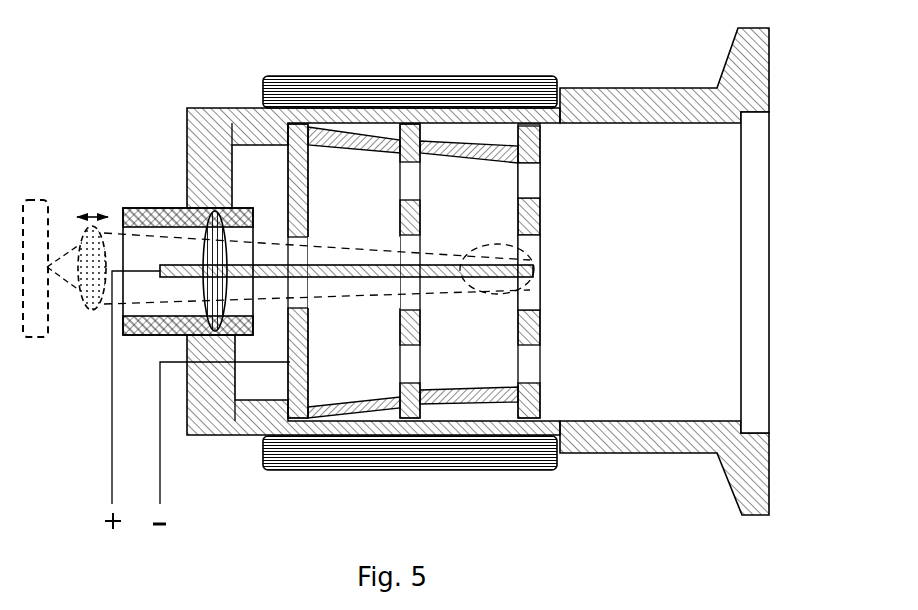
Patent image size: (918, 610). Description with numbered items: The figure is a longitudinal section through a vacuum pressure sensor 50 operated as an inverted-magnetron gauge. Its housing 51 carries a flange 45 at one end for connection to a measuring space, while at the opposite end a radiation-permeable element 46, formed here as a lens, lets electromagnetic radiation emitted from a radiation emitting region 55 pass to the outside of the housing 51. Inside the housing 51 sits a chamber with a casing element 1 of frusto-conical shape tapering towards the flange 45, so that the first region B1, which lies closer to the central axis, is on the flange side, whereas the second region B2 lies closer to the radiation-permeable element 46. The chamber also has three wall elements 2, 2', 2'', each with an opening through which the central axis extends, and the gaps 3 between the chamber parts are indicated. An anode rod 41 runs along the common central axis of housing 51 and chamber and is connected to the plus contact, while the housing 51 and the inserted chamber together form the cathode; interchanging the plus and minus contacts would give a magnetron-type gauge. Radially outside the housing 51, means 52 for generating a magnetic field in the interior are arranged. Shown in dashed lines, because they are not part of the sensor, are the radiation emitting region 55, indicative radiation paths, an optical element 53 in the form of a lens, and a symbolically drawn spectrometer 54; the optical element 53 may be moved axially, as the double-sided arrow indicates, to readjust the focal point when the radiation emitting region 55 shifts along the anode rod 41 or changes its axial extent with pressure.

The casing element 1 is at (463, 145).
The wall element 2 is at (315, 271).
The wall element 2' is at (429, 271).
The wall element 2'' is at (554, 271).
The gaps / apertures between plate segments 3 is at (546, 177).
The anode rod 41 is at (444, 279).
The flange 45 is at (762, 515).
The radiation-permeable element 46 is at (192, 251).
The vacuum pressure sensor 50 is at (394, 36).
The housing 51 is at (216, 108).
The means for generating a magnetic field 52 is at (331, 78).
The optical element 53 is at (87, 330).
The spectrometer 54 is at (33, 344).
The radiation emitting region 55 is at (531, 289).
The first region B1 is at (505, 403).
The second region B2 is at (325, 421).